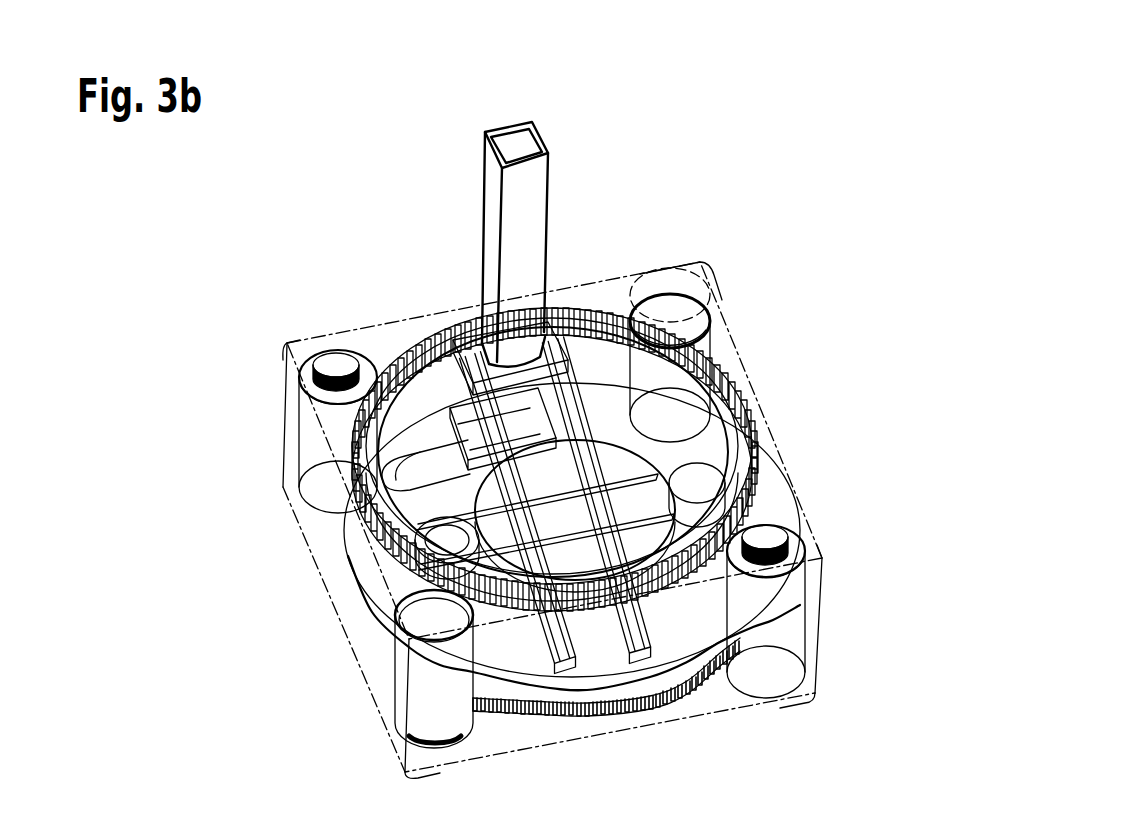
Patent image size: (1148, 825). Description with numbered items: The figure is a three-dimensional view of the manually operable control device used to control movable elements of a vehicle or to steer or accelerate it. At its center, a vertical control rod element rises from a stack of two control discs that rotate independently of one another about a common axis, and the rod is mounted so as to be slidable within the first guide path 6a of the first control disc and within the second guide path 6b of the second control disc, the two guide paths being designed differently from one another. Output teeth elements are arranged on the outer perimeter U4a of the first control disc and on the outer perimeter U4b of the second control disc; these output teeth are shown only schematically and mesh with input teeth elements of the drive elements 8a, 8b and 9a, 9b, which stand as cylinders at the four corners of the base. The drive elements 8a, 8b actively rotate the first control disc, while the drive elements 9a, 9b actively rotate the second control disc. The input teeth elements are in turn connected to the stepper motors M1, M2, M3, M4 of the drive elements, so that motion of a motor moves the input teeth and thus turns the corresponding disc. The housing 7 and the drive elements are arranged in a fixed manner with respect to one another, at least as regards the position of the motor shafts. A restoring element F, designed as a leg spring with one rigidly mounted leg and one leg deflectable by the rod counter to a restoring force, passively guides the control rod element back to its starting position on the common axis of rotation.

The drive element 8a is at (330, 372).
The housing 7 is at (393, 355).
The restoring element F is at (455, 340).
The first guide path 6a is at (578, 390).
The drive element 9a is at (669, 308).
The stepper motor M3 is at (703, 360).
The outer perimeter of the first control disc U4a is at (735, 395).
The stepper motor M1 is at (318, 421).
The second guide path 6b is at (397, 483).
The drive element 9b is at (425, 617).
The stepper motor M4 is at (425, 693).
The drive element 8b is at (770, 540).
The stepper motor M2 is at (770, 625).
The outer perimeter of the second control disc U4b is at (635, 705).